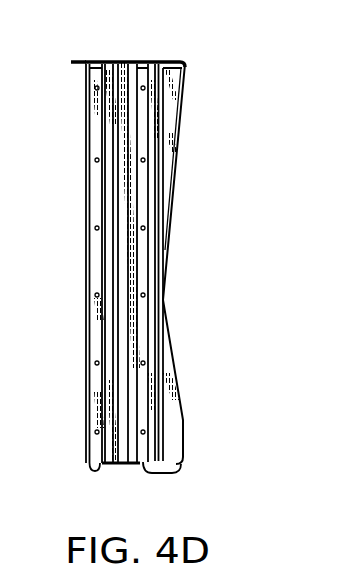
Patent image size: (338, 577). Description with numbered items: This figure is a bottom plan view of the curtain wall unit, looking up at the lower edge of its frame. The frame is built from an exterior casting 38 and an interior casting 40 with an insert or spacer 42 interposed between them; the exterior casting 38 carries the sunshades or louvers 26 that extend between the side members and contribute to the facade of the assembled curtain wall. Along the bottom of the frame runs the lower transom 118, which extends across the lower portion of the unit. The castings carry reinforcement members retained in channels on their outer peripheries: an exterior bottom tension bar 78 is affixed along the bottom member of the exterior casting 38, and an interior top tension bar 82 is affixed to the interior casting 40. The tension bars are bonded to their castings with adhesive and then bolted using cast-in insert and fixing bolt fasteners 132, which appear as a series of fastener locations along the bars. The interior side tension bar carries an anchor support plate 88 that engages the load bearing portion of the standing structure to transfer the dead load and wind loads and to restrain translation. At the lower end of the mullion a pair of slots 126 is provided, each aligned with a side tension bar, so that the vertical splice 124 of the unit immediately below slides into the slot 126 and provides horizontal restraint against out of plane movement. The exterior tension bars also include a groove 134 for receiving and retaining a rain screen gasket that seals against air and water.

The sunshades or louvers 26 is at (167, 143).
The exterior casting 38 is at (195, 72).
The interior casting 40 is at (81, 84).
The insert or spacer 42 is at (122, 61).
The exterior bottom reinforcement or tension bar 78 is at (148, 348).
The interior top reinforcement or tension bar 82 is at (97, 342).
The anchor support plate 88 is at (83, 61).
The lower transom 118 is at (125, 455).
The vertical splice 124 is at (143, 61).
The slot 126 is at (100, 61).
The cast-in insert and fixing bolt fasteners 132 is at (97, 160).
The groove 134 is at (150, 128).